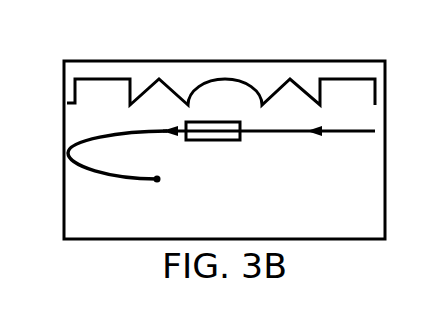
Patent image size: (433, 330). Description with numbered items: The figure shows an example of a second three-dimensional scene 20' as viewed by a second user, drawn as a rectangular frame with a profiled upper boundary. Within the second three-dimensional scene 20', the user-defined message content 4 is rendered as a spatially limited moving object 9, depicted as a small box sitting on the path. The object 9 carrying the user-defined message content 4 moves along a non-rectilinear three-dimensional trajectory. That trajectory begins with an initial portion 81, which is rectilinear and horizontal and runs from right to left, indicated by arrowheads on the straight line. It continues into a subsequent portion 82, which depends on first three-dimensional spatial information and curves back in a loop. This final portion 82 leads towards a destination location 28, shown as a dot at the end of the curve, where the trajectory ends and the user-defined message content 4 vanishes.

The second three-dimensional scene 20' is at (221, 57).
The subsequent portion of the trajectory 82 is at (118, 178).
The destination location 28 is at (157, 179).
The spatially limited moving object 9 is at (213, 140).
The user-defined message content 4 is at (268, 163).
The initial portion of the trajectory 81 is at (312, 132).